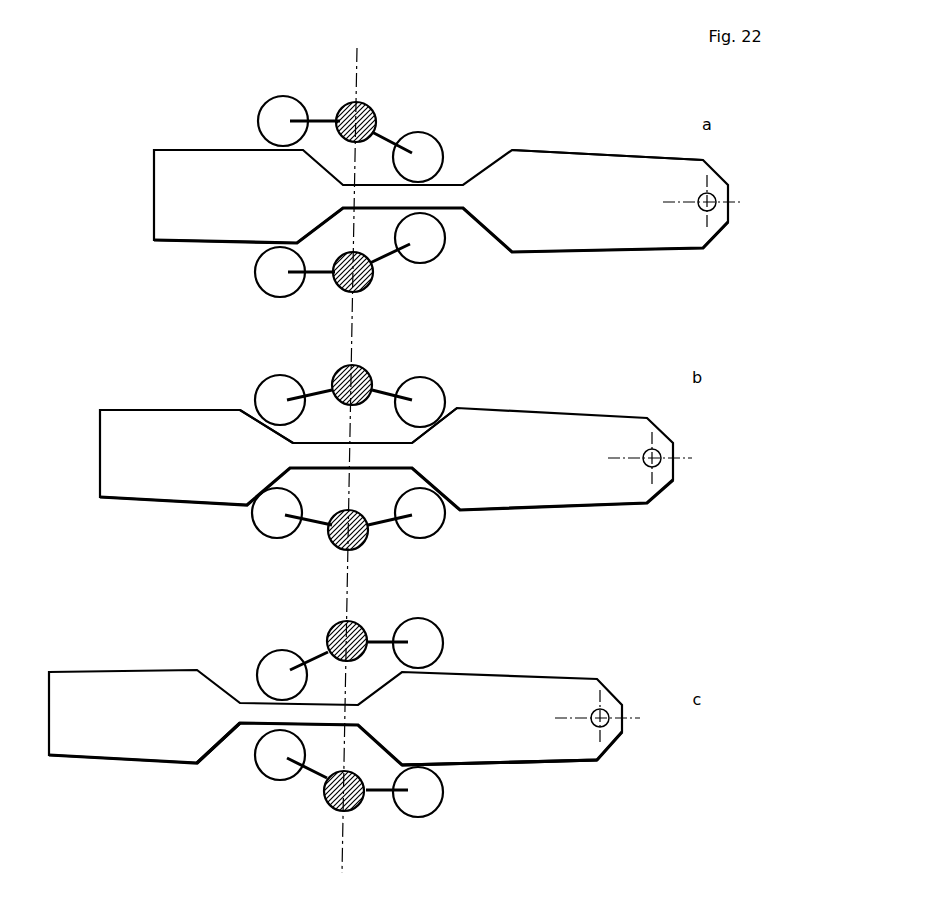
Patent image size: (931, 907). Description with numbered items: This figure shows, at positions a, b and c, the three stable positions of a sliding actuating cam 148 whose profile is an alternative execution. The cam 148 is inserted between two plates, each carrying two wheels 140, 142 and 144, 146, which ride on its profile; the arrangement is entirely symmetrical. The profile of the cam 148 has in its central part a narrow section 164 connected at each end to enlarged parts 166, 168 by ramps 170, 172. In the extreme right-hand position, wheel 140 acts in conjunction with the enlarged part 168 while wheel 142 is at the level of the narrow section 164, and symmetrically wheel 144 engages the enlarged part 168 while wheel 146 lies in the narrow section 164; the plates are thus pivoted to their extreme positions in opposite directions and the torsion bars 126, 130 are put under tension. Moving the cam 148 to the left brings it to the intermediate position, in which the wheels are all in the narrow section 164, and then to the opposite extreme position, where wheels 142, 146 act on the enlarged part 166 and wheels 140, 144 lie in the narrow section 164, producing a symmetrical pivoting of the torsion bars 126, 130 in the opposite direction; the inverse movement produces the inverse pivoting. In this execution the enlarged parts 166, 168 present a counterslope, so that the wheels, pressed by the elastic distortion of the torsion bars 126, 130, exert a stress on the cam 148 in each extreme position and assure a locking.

The torsion bar 126 is at (364, 100).
The torsion bar 130 is at (367, 292).
The wheel 140 is at (283, 100).
The wheel 142 is at (418, 137).
The wheel 144 is at (268, 283).
The wheel 146 is at (440, 260).
The sliding cam 148 is at (553, 173).
The narrow section 164 is at (246, 729).
The enlarged part 166 is at (625, 152).
The enlarged part 168 is at (192, 147).
The ramp 170 is at (442, 430).
The ramp 172 is at (268, 431).